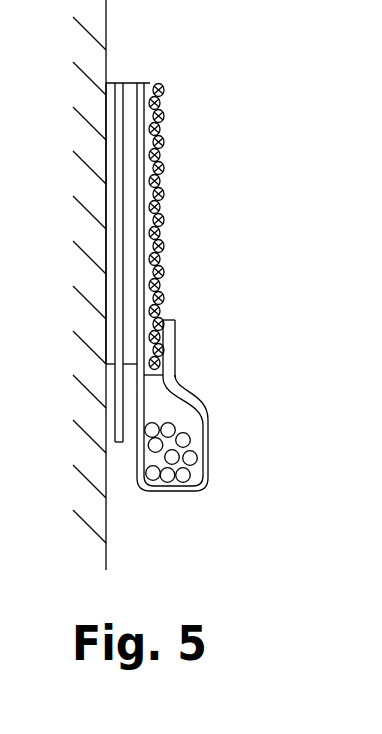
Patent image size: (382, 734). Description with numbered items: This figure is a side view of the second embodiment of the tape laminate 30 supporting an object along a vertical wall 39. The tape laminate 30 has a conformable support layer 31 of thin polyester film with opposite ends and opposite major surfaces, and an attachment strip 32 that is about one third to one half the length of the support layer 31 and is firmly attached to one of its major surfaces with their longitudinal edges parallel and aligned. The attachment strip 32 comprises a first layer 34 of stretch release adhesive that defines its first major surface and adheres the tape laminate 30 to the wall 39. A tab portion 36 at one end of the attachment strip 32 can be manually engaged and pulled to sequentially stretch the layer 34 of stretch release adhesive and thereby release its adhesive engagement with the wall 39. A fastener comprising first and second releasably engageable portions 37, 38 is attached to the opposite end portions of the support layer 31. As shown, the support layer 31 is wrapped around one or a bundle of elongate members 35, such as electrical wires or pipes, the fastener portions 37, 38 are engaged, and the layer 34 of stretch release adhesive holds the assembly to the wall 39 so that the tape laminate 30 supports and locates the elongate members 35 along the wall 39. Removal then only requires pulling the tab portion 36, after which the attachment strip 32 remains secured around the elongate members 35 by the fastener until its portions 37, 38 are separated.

The tape laminate 30 is at (153, 256).
The support layer 31 is at (138, 262).
The attachment strip 32 is at (110, 82).
The first layer of stretch release adhesive 34 is at (110, 210).
The elongate member 35 is at (176, 457).
The tab portion 36 is at (120, 423).
The first releasably engageable portion of fastener 37 is at (162, 213).
The second releasably engageable portion of fastener 38 is at (163, 352).
The wall 39 is at (107, 515).